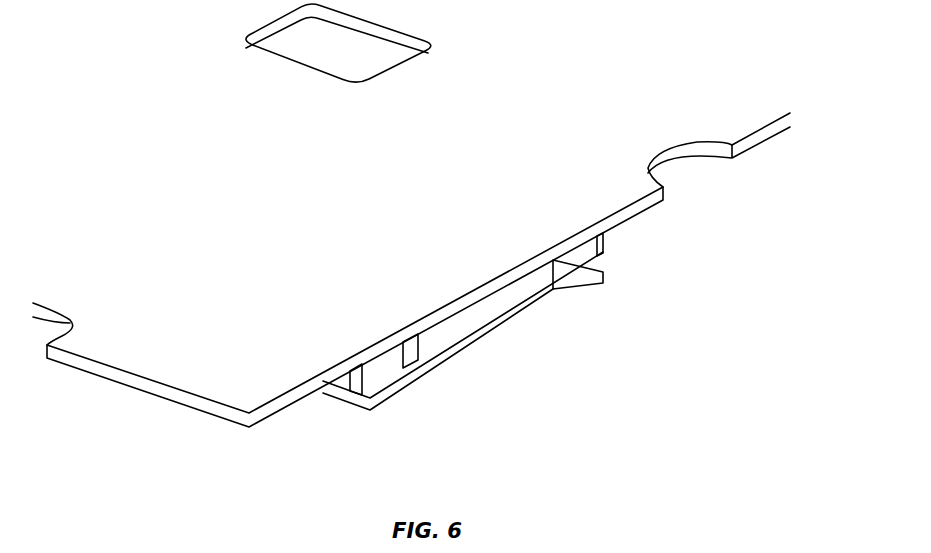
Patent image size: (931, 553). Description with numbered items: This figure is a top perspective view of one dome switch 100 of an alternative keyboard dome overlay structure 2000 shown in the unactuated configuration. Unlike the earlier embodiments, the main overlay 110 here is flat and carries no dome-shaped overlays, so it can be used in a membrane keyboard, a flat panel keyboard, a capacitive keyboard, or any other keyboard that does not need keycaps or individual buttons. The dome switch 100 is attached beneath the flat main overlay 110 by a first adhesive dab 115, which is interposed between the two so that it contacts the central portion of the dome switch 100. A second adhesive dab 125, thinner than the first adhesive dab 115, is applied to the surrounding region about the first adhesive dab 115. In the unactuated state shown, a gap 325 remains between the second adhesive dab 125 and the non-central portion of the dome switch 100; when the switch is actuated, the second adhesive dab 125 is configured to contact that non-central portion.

The keyboard dome overlay structure 2000 is at (603, 63).
The main overlay 110 is at (153, 358).
The dome switch 100 is at (472, 356).
The first adhesive dab 115 is at (478, 313).
The second adhesive dab 125 is at (367, 373).
The gap 325 is at (388, 378).